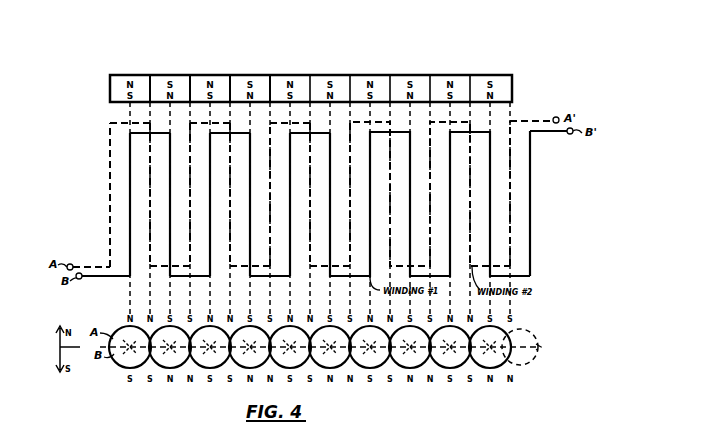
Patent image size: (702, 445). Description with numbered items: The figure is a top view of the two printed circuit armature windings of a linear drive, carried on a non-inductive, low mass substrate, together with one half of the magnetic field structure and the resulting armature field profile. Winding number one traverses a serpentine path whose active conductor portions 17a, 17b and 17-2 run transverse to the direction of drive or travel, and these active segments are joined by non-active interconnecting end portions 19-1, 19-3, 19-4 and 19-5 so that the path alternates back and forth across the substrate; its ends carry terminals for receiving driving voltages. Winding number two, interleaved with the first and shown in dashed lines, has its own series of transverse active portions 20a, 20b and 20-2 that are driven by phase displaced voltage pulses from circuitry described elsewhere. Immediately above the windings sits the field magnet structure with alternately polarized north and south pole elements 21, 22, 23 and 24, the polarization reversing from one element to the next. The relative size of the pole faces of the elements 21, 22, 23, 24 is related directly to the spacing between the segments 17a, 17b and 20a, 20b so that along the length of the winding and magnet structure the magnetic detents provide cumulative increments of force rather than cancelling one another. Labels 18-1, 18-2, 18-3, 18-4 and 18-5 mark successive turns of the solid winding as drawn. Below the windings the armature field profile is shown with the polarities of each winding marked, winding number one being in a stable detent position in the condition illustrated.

The north/south pole element 21 is at (140, 75).
The north/south pole element 22 is at (180, 75).
The north/south pole element 23 is at (220, 75).
The north/south pole element 24 is at (260, 75).
The active conductor portion of winding #1 17a is at (110, 143).
The active conductor portion of winding #1 17b is at (150, 173).
The active conductor portion of winding #1 17-2 is at (513, 178).
The transverse active portion of winding #2 20a is at (130, 160).
The transverse active portion of winding #2 20b is at (168, 187).
The transverse active portion of winding #2 20-2 is at (533, 207).
The second winding pole segment 18-1 is at (166, 108).
The second winding pole segment 18-2 is at (199, 277).
The second winding pole segment 18-3 is at (208, 133).
The second winding pole segment 18-4 is at (291, 277).
The second winding pole segment 18-5 is at (318, 133).
The non-active interconnecting end portion 19-1 is at (110, 125).
The non-active interconnecting end portion 19-3 is at (240, 123).
The non-active interconnecting end portion 19-4 is at (240, 267).
The non-active interconnecting end portion 19-5 is at (281, 127).